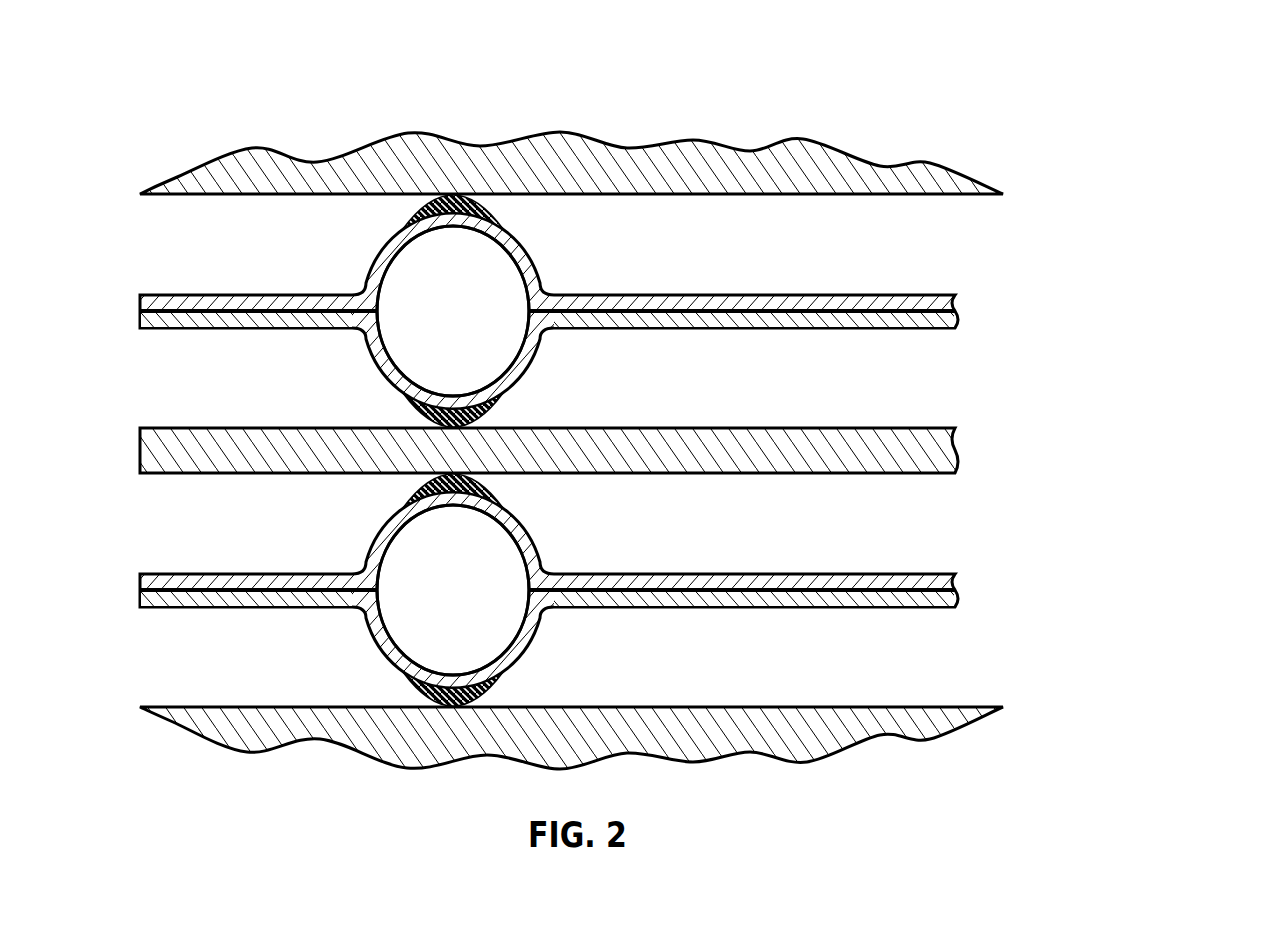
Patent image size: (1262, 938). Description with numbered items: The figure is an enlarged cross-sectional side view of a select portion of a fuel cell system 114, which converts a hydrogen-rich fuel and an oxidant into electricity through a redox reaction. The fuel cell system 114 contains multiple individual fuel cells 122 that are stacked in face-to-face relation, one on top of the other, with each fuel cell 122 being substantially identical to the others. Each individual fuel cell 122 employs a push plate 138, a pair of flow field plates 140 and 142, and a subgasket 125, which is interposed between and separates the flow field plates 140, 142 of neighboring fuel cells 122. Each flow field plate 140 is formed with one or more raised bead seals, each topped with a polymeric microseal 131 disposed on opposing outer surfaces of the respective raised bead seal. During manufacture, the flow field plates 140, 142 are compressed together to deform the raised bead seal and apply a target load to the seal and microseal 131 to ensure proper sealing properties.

The fuel cell system 114 is at (1120, 80).
The fuel cell 122 is at (975, 230).
The subgasket 125 is at (200, 427).
The polymeric microseal 131 is at (412, 207).
The push plate 138 is at (185, 178).
The flow field plate 140 is at (531, 306).
The flow field plate 142 is at (531, 586).